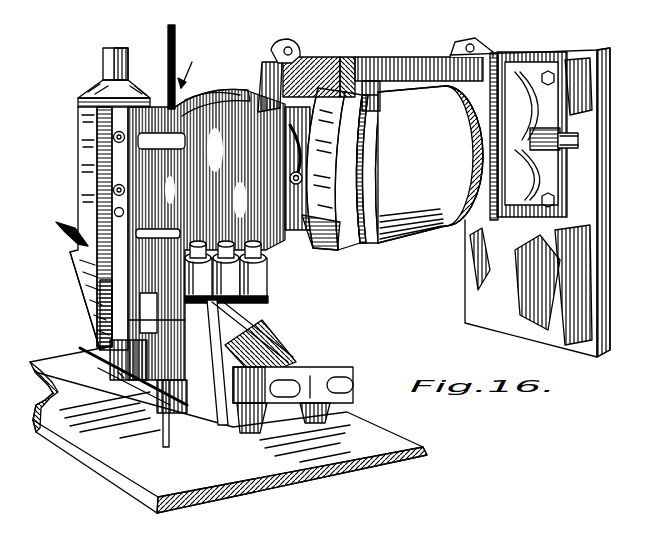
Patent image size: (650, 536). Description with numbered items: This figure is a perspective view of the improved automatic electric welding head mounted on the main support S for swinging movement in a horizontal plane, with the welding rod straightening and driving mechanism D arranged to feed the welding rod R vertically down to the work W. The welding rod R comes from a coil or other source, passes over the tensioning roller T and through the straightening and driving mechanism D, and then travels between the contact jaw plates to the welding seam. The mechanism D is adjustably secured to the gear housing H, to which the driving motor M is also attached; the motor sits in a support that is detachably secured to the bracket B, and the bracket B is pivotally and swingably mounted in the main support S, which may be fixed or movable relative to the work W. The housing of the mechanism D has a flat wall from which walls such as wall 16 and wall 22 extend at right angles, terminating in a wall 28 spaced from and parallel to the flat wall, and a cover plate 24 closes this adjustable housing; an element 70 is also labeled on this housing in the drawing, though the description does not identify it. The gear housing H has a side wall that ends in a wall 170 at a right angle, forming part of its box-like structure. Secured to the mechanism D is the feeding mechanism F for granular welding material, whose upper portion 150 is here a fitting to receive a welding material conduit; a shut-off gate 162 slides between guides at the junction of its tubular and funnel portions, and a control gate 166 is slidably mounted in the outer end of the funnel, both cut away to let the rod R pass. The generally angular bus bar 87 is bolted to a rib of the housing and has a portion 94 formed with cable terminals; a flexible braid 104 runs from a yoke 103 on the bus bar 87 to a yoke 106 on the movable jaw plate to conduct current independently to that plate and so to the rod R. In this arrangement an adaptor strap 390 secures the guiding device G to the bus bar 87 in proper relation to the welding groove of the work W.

The upper portion 150 is at (143, 67).
The welding rod R is at (174, 37).
The welding rod straightening and driving mechanism D is at (192, 65).
The wall 16 is at (210, 100).
The wall 170 is at (248, 110).
The tensioning roller T is at (288, 46).
The bracket B is at (400, 61).
The main support S is at (608, 134).
The bolt 70 is at (97, 134).
The welding material feeding mechanism F is at (78, 152).
The wall 22 is at (100, 190).
The wall 28 is at (97, 211).
The shut-off gate 162 is at (66, 231).
The yoke 103 is at (110, 294).
The flexible braid 104 is at (100, 308).
The control gate 166 is at (93, 350).
The yoke 106 is at (120, 375).
The gear housing H is at (296, 189).
The cover plate 24 is at (265, 232).
The driving motor M is at (384, 236).
The portion 94 is at (262, 297).
The bus bar 87 is at (248, 300).
The adaptor strap 390 is at (265, 336).
The guiding device G is at (348, 372).
The work W is at (395, 440).